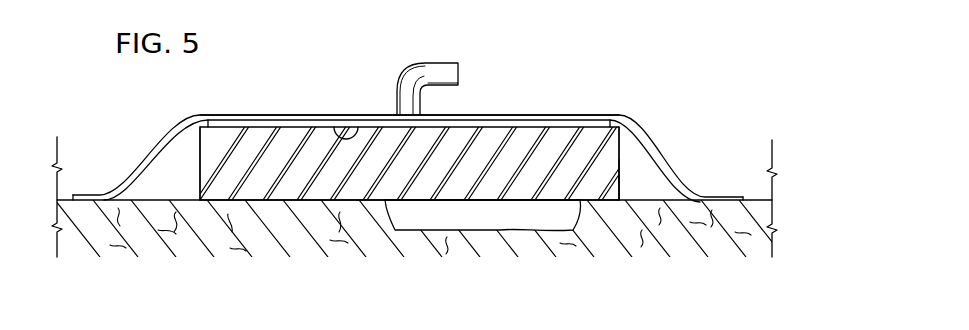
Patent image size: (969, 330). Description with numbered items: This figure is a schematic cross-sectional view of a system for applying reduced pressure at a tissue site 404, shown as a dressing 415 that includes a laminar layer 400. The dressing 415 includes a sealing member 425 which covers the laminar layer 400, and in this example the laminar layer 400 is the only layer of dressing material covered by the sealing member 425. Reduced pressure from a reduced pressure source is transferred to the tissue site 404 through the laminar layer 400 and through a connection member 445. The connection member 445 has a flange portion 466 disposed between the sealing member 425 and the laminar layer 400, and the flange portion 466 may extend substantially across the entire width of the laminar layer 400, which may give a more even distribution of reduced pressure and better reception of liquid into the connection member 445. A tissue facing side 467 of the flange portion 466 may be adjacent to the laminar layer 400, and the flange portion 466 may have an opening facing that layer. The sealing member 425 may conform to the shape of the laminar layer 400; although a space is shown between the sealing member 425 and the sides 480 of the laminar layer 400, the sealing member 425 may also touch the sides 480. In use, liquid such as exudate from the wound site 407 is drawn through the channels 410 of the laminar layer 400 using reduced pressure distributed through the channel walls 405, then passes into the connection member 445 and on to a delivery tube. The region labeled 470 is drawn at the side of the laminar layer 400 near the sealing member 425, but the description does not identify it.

The laminar layer 400 is at (626, 143).
The tissue site 404 is at (431, 232).
The channel walls 405 is at (478, 183).
The wound site 407 is at (549, 230).
The channels 410 is at (490, 137).
The dressing 415 is at (626, 57).
The sealing member 425 is at (184, 122).
The connection member 445 is at (398, 80).
The flange portion 466 is at (257, 115).
The tissue facing side 467 is at (346, 116).
The side wall 470 is at (620, 158).
The sides 480 is at (200, 156).